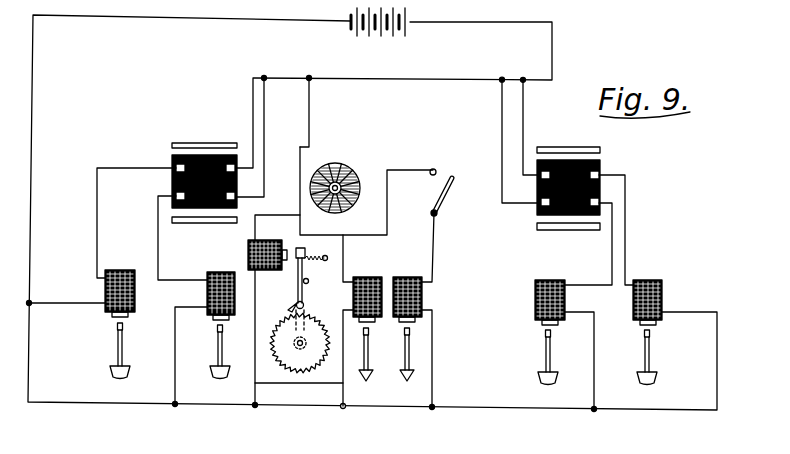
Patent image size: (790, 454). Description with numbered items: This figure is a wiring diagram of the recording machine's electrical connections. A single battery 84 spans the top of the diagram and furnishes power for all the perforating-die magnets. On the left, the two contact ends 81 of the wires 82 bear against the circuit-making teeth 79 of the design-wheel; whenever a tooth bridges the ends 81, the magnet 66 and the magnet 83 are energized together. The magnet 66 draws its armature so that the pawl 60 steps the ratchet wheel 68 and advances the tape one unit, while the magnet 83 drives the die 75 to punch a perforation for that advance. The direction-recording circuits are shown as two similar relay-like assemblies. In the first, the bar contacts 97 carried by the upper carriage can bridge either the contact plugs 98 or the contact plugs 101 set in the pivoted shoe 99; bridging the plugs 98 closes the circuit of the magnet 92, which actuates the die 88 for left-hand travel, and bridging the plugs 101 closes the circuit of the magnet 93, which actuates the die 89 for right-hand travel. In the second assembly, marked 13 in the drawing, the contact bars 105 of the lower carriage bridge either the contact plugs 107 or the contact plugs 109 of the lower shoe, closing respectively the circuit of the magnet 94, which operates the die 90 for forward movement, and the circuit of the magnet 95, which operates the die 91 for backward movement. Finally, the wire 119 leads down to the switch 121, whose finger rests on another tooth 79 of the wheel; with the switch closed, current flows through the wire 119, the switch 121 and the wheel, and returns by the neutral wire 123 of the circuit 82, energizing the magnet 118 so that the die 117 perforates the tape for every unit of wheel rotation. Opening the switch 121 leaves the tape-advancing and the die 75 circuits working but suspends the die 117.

The relay 13 is at (576, 194).
The pawl 60 is at (293, 305).
The magnet 66 is at (272, 232).
The ratchet wheel 68 is at (312, 325).
The die 75 is at (366, 383).
The circuit-making teeth 79 is at (345, 176).
The ends of the wires 81 is at (298, 189).
The wires 82 is at (299, 390).
The magnet 83 is at (368, 277).
The battery 84 is at (352, 26).
The die 88 is at (120, 380).
The die 89 is at (220, 380).
The die 90 is at (548, 386).
The die 91 is at (647, 386).
The magnet 92 is at (122, 270).
The magnet 93 is at (230, 258).
The magnet 94 is at (560, 280).
The magnet 95 is at (660, 280).
The bar contacts 97 is at (191, 143).
The contact plugs 98 is at (177, 167).
The shoe 99 is at (185, 181).
The contact plugs 101 is at (177, 195).
The contact bars 105 is at (580, 138).
The contact plugs 107 is at (541, 203).
The contact plugs 109 is at (541, 175).
The die 117 is at (407, 383).
The magnet 118 is at (420, 262).
The wire 119 is at (432, 228).
The switch 121 is at (440, 202).
The neutral wire 123 is at (309, 122).